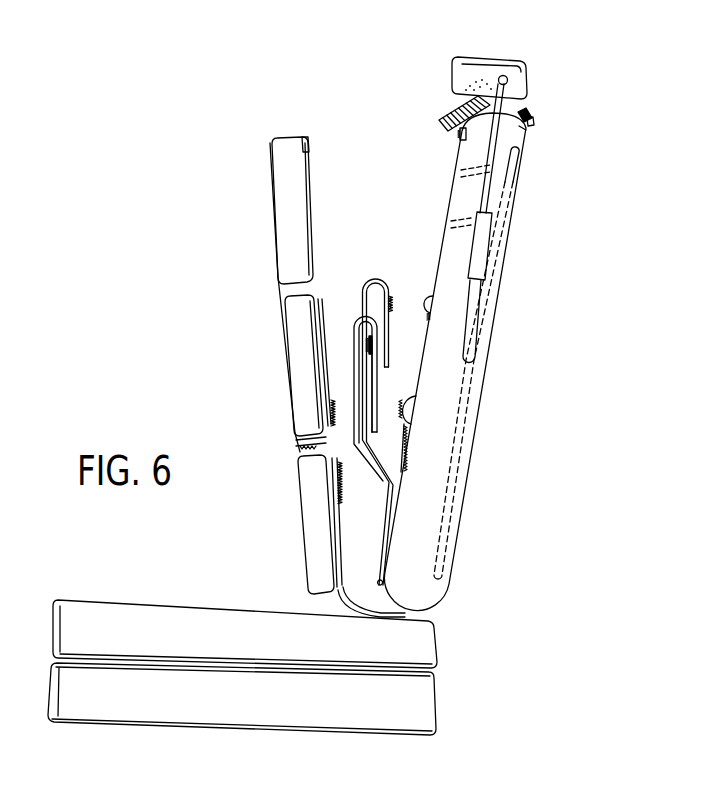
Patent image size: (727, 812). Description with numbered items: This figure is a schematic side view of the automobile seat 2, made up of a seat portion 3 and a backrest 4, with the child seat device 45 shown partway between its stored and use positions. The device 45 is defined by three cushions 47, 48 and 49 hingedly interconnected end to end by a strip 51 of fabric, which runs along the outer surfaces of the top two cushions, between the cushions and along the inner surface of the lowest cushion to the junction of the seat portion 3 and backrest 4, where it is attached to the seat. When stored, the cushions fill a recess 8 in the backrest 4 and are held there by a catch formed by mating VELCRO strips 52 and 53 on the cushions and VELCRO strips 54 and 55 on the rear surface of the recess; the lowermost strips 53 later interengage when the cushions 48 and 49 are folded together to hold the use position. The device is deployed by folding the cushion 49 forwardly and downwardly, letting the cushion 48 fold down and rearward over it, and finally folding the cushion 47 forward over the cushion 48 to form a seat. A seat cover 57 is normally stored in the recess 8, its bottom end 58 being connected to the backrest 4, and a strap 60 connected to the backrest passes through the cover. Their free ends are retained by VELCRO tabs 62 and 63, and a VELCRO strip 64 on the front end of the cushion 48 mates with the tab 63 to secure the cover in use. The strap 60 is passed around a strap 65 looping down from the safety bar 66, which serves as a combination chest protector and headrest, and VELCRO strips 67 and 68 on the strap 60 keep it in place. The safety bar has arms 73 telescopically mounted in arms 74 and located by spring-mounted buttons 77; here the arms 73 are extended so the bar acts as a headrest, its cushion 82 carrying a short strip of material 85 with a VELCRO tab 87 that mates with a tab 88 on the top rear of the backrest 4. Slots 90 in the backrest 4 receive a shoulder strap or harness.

The automobile seat 2 is at (438, 652).
The seat portion 3 is at (107, 622).
The backrest 4 is at (427, 483).
The recess 8 is at (450, 212).
The seat device 45 is at (242, 148).
The cushion 47 is at (284, 188).
The cushion 48 is at (300, 362).
The cushion 49 is at (312, 542).
The strip of fabric 51 is at (280, 284).
The VELCRO strip 52 is at (307, 143).
The VELCRO strip 53 is at (326, 400).
The VELCRO strip 54 is at (460, 137).
The VELCRO strip 55 is at (405, 402).
The seat cover 57 is at (373, 285).
The bottom end 58 is at (383, 552).
The strap 60 is at (353, 325).
The VELCRO tab 62 is at (428, 300).
The VELCRO tab 63 is at (403, 295).
The VELCRO strip 64 is at (305, 444).
The strap 65 is at (442, 108).
The safety bar 66 is at (523, 65).
The VELCRO strip 67 is at (372, 350).
The VELCRO strip 68 is at (373, 394).
The arm 73 is at (490, 152).
The arm 74 is at (470, 328).
The button 77 is at (473, 238).
The cushion 82 is at (473, 62).
The strip of material 85 is at (532, 121).
The VELCRO tab 87 is at (525, 116).
The VELCRO tab 88 is at (523, 128).
The slot 90 is at (515, 230).